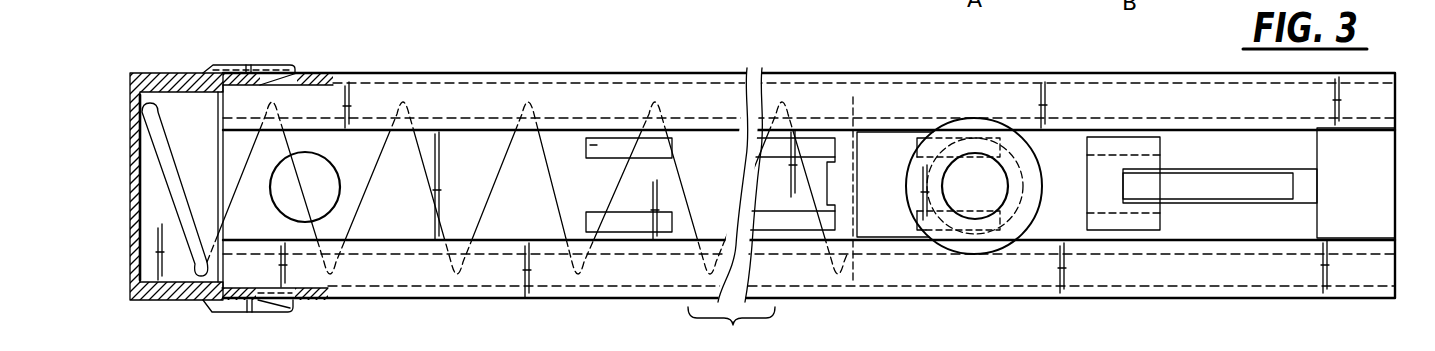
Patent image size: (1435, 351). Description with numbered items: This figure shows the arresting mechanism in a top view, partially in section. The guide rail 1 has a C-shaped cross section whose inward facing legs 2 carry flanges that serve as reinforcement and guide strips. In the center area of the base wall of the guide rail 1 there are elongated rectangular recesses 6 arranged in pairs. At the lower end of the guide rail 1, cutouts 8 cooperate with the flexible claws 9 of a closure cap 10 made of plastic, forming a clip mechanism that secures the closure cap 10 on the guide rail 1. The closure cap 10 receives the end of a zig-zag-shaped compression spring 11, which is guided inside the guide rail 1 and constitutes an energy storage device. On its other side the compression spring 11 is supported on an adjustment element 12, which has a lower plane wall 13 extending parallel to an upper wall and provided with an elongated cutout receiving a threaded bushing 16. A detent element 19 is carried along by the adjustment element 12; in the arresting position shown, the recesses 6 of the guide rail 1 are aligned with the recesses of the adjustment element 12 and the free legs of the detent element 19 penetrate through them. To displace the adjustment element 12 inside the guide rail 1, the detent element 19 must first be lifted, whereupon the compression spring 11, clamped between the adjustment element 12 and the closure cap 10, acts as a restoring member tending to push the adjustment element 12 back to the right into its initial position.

The guide rail 1 is at (797, 72).
The inward facing legs 2 is at (458, 97).
The recesses 6 is at (588, 210).
The cutouts 8 is at (293, 73).
The flexible claws 9 is at (280, 310).
The closure cap 10 is at (173, 299).
The compression spring 11 is at (371, 152).
The adjustment element 12 is at (880, 145).
The lower plane wall 13 is at (787, 184).
The threaded bushing 16 is at (912, 197).
The detent element 19 is at (1108, 137).